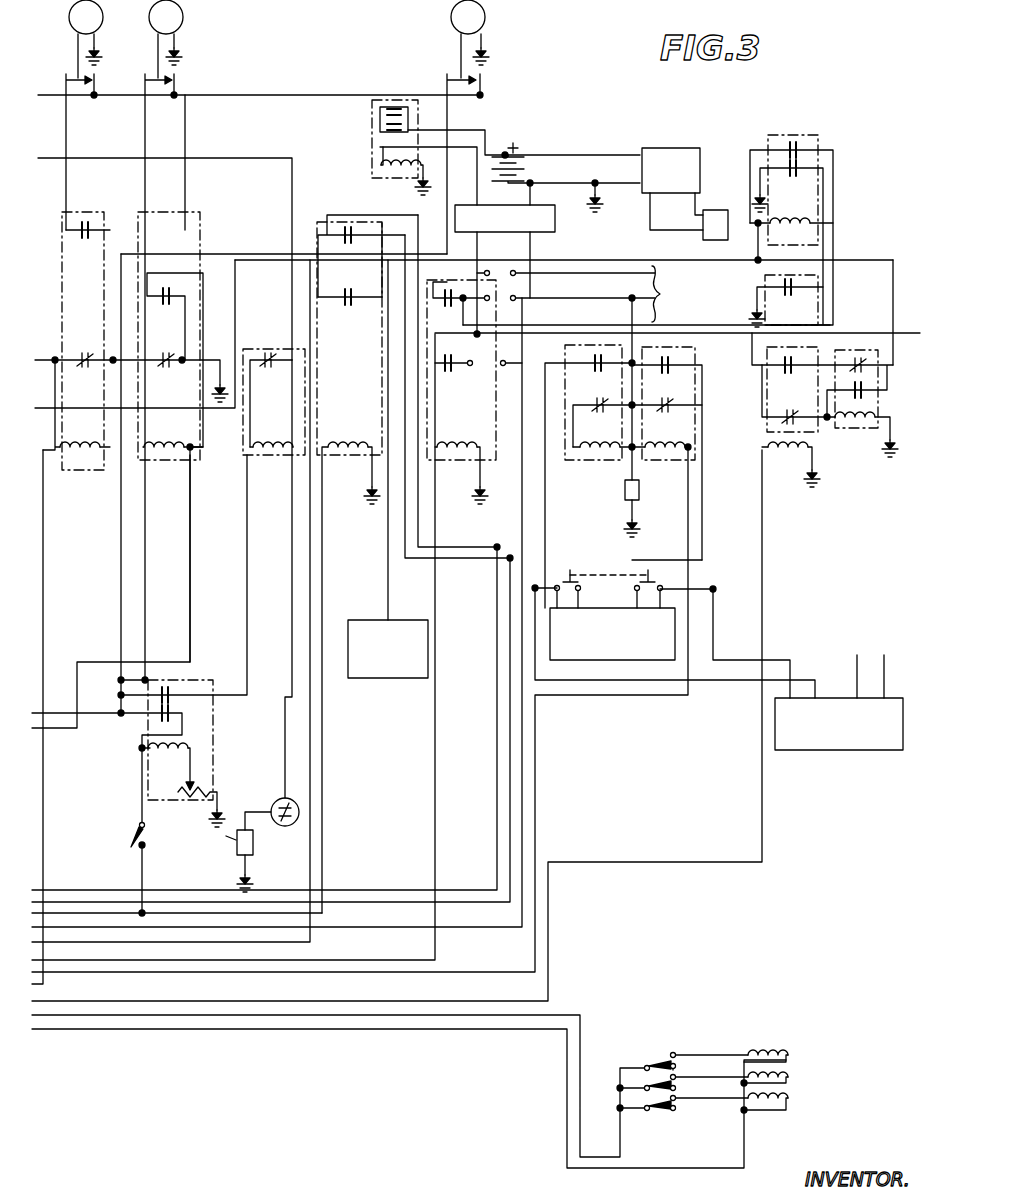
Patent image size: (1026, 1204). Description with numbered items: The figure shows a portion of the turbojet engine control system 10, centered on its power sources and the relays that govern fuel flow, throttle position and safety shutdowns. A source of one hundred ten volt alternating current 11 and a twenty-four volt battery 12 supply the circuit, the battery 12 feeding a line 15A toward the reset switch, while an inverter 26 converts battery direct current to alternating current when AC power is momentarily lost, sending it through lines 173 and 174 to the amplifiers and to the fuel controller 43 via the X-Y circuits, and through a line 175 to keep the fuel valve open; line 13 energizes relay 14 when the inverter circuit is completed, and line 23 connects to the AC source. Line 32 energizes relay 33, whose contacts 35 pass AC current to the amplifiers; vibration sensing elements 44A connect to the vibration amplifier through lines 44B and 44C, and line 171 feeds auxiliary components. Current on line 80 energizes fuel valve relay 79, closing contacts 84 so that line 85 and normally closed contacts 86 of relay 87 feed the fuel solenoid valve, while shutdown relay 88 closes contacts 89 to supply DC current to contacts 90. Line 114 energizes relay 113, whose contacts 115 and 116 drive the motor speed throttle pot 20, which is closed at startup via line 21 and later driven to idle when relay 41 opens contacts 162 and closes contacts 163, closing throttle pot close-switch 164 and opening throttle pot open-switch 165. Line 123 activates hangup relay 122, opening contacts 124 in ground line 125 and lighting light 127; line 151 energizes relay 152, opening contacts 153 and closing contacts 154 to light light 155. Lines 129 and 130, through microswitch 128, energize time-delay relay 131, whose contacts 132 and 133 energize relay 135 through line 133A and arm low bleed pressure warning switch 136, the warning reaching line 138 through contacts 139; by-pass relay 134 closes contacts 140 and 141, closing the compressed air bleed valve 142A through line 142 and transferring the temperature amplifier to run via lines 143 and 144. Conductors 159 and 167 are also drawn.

The control system 10 is at (530, 97).
The source of 110 volt alternating current 11 is at (710, 210).
The battery 12 is at (526, 168).
The line 13 is at (354, 166).
The relay 14 is at (366, 174).
The line 15A is at (485, 126).
The motor speed throttle pot 20 is at (585, 660).
The line 21 is at (624, 702).
The line 23 is at (566, 282).
The inverter 26 is at (557, 232).
The line 32 is at (436, 730).
The relay 33 is at (452, 464).
The contacts 35 is at (448, 298).
The relay 41 is at (626, 482).
The fuel controller 43 is at (804, 750).
The vibration sensing elements 44A is at (786, 1062).
The line 44B is at (292, 1030).
The line 44C is at (382, 1018).
The fuel valve relay 79 is at (768, 458).
The line 80 is at (762, 560).
The contacts 84 is at (768, 358).
The line 85 is at (892, 350).
The normally closed contacts 86 is at (858, 352).
The relay 87 is at (830, 434).
The shutdown relay 88 is at (812, 140).
The contacts 89 is at (796, 184).
The normally closed contacts 90 is at (788, 416).
The relay 113 is at (586, 464).
The line 114 is at (538, 478).
The normally closed contacts 115 is at (604, 382).
The normally open contacts 116 is at (602, 358).
The hangup relay 122 is at (158, 464).
The line 123 is at (190, 598).
The normally closed contacts 124 is at (160, 372).
The ground line 125 is at (160, 330).
The light 127 is at (182, 24).
The microswitch 128 is at (134, 832).
The line 129 is at (314, 710).
The line 130 is at (144, 866).
The time-delay relay 131 is at (214, 748).
The normally open contacts 132 is at (190, 718).
The normally open contacts 133 is at (176, 688).
The line 133A is at (236, 580).
The by-pass relay 134 is at (348, 470).
The relay 135 is at (266, 464).
The low bleed pressure warning switch 136 is at (276, 798).
The line 138 is at (262, 152).
The normally closed contacts 139 is at (272, 372).
The normally open contacts 140 is at (342, 304).
The normally open contacts 141 is at (356, 212).
The line 142 is at (388, 602).
The compressed air bleed valve 142A is at (370, 686).
The line 143 is at (404, 216).
The line 144 is at (484, 582).
The line 151 is at (44, 540).
The relay 152 is at (70, 464).
The normally closed contacts 153 is at (78, 370).
The normally open contacts 154 is at (80, 240).
The light 155 is at (99, 20).
The conductor 159 is at (266, 244).
The contacts 162 is at (684, 388).
The normally open contacts 163 is at (672, 369).
The throttle pot close-switch 164 is at (668, 560).
The throttle pot open-switch 165 is at (534, 588).
The relay 167 is at (681, 292).
The line 171 is at (616, 284).
The line 173 is at (540, 274).
The line 174 is at (484, 274).
The line 175 is at (534, 356).